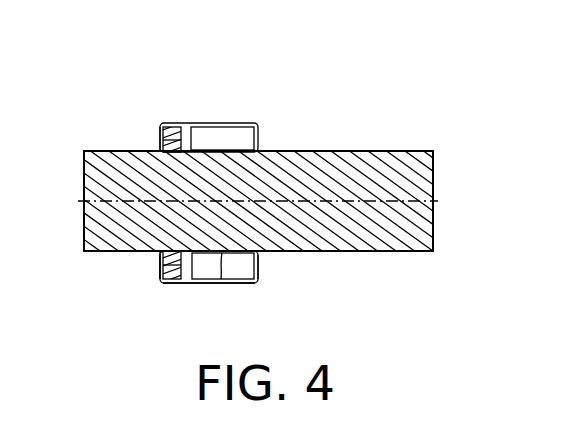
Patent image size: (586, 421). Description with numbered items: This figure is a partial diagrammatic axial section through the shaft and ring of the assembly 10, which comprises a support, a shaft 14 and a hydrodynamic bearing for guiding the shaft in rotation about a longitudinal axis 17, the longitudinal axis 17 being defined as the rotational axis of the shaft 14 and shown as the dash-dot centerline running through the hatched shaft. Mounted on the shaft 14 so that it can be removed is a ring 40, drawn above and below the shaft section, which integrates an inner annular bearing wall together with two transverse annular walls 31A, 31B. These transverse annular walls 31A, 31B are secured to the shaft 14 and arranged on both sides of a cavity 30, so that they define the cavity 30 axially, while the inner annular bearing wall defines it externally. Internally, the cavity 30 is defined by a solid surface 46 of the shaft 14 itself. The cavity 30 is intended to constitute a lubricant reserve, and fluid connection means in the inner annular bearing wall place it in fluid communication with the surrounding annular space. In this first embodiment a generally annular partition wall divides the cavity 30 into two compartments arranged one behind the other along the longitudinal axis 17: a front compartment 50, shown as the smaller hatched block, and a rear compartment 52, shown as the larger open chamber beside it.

The assembly 10 is at (364, 110).
The shaft 14 is at (365, 238).
The longitudinal axis 17 is at (104, 202).
The cavity 30 is at (155, 85).
The transverse annular wall 31A is at (162, 263).
The transverse annular wall 31B is at (262, 266).
The ring 40 is at (189, 304).
The solid surface 46 is at (237, 284).
The front compartment 50 is at (178, 128).
The rear compartment 52 is at (222, 132).